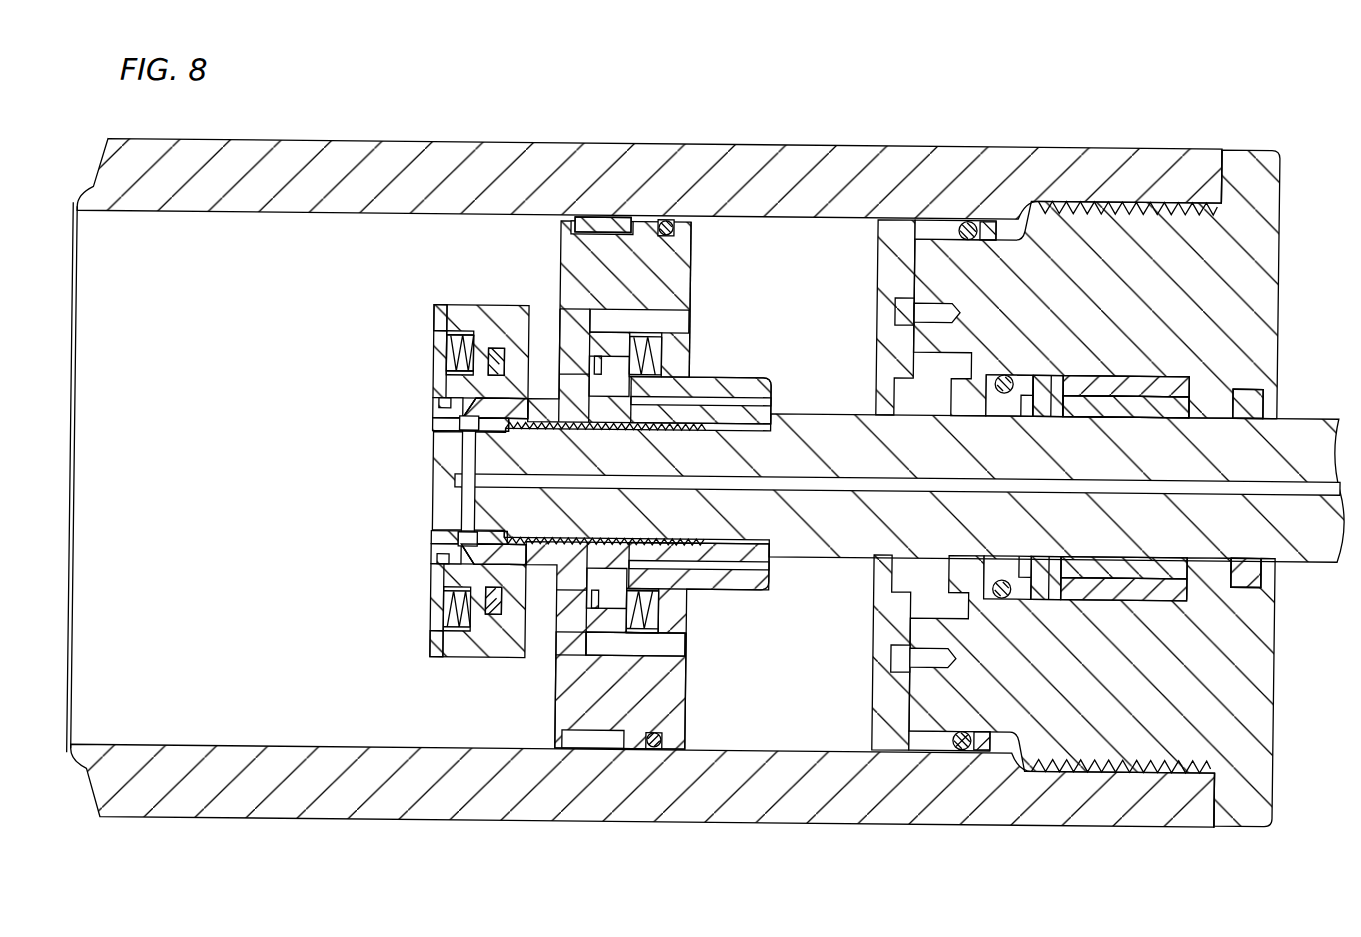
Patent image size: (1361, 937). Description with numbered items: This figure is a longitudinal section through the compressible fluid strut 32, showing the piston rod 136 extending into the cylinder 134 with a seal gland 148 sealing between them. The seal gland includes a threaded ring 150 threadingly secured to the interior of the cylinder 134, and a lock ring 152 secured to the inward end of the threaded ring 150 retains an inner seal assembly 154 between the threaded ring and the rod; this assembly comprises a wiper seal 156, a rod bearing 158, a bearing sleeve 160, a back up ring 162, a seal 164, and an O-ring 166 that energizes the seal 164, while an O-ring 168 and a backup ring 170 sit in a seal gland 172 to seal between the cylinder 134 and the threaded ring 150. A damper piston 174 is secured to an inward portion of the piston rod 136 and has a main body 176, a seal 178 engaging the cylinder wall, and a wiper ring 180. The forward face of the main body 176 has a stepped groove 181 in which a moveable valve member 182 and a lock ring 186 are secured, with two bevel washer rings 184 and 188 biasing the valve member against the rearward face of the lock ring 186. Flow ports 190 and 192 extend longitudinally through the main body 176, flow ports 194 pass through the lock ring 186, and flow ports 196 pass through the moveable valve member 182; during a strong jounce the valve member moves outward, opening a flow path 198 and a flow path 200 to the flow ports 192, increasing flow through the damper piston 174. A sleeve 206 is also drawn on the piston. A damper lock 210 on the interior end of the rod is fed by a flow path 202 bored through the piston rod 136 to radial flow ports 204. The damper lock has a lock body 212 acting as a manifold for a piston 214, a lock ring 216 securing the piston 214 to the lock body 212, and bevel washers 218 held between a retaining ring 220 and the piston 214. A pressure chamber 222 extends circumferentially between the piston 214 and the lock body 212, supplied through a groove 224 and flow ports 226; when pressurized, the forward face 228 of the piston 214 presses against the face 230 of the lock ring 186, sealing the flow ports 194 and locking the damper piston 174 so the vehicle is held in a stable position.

The compressible fluid strut 32 is at (308, 114).
The cylinder 134 is at (455, 152).
The piston rod 136 is at (1290, 410).
The seal gland 148 is at (1250, 138).
The threaded ring 150 is at (1112, 238).
The lock ring 152 is at (890, 230).
The inner seal assembly 154 is at (855, 598).
The wiper seal 156 is at (1262, 384).
The rod bearing 158 is at (1162, 374).
The bearing sleeve 160 is at (1108, 374).
The back up ring 162 is at (1012, 374).
The seal 164 is at (1015, 584).
The O-ring 166 is at (1000, 596).
The O-ring 168 is at (945, 752).
The backup ring 170 is at (978, 762).
The seal gland 172 is at (935, 736).
The damper piston 174 is at (702, 240).
The main body 176 is at (690, 302).
The seal 178 is at (668, 218).
The wiper ring 180 is at (610, 218).
The stepped groove 181 is at (560, 330).
The moveable valve member 182 is at (612, 330).
The bevel washer ring 184 is at (642, 334).
The lock ring 186 is at (560, 322).
The bevel washer ring 188 is at (682, 348).
The flow port 190 is at (720, 576).
The flow port 192 is at (680, 660).
The flow port 194 is at (525, 540).
The flow port 196 is at (618, 558).
The flow path 198 is at (600, 560).
The flow path 200 is at (602, 652).
The flow path 202 is at (1125, 472).
The flow port 204 is at (460, 476).
The sleeve 206 is at (690, 398).
The damper lock 210 is at (430, 300).
The lock body 212 is at (440, 430).
The piston 214 is at (455, 660).
The lock ring 216 is at (434, 316).
The bevel washer 218 is at (434, 598).
The retaining ring 220 is at (440, 345).
The pressure chamber 222 is at (440, 378).
The groove 224 is at (465, 455).
The flow port 226 is at (470, 398).
The forward face 228 is at (520, 650).
The face 230 is at (550, 640).